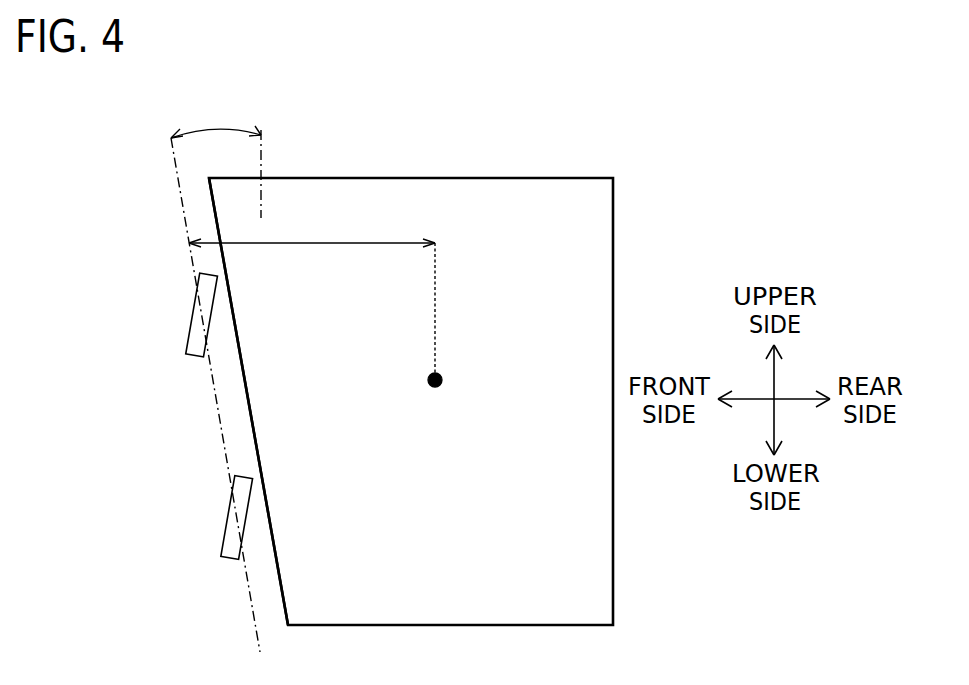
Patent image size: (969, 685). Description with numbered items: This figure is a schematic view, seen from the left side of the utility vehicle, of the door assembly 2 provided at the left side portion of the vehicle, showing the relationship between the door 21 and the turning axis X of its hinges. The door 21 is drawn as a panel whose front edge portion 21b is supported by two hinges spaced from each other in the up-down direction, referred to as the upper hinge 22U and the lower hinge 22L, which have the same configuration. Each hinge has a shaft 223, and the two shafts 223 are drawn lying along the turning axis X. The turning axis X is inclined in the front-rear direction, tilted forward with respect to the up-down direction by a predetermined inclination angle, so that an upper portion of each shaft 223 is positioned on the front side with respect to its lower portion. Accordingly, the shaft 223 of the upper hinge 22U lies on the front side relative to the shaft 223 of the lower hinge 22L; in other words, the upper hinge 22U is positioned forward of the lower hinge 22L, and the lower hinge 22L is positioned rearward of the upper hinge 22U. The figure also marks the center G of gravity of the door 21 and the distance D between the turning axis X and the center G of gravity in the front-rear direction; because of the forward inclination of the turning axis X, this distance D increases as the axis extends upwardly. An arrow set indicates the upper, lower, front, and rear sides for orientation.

The door assembly 2 is at (414, 356).
The door 21 is at (459, 177).
The front edge portion of the door 21b is at (260, 402).
The shaft 223 is at (143, 416).
The upper hinge 22U is at (190, 306).
The lower hinge 22L is at (225, 505).
The turning axis X is at (178, 188).
The distance D is at (312, 293).
The center of gravity G is at (442, 373).